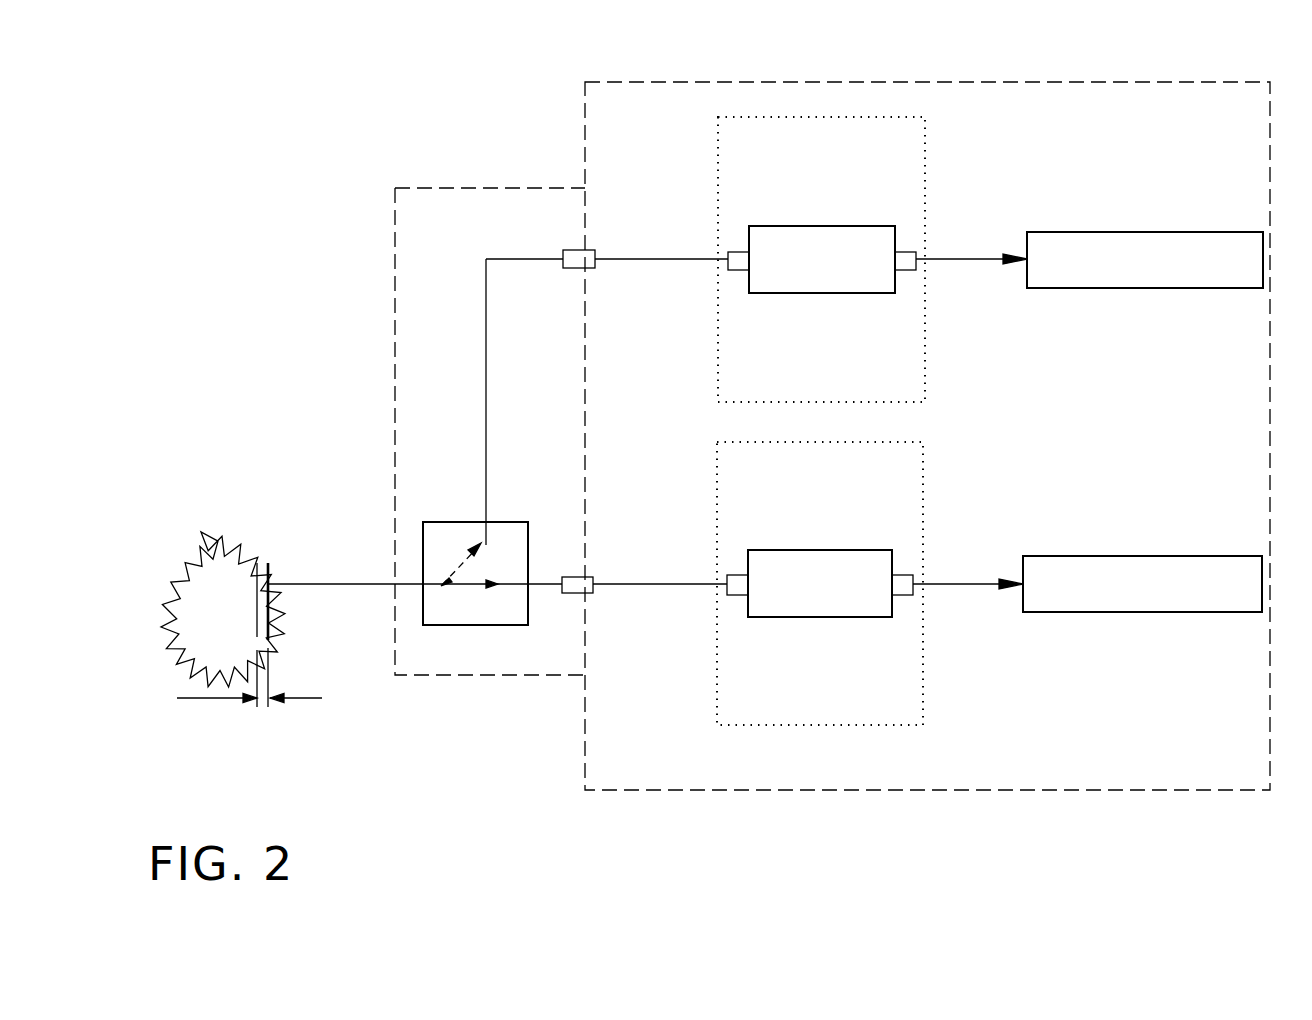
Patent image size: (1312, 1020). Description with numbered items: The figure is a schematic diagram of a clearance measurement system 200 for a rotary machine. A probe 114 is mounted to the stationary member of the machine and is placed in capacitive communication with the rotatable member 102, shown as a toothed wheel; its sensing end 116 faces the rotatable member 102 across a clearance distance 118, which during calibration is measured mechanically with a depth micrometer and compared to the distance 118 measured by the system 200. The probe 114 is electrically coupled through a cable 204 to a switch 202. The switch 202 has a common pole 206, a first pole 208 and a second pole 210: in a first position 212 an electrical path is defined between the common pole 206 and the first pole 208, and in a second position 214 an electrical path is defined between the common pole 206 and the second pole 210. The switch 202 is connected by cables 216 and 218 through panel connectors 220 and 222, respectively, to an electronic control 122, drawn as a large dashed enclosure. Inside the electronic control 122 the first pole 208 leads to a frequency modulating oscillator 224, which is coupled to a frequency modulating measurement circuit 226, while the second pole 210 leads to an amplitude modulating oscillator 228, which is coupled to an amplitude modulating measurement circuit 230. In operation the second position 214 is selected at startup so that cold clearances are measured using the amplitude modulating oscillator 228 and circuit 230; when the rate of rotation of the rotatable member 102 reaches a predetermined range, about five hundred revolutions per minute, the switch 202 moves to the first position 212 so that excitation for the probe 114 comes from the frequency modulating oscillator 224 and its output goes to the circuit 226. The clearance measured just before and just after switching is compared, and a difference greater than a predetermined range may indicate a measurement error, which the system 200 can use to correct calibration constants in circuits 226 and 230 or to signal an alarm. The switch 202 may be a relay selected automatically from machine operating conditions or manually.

The rotatable member 102 is at (170, 560).
The probe 114 is at (268, 577).
The sensing end 116 is at (265, 565).
The distance 118 is at (212, 698).
The electronic control 122 is at (635, 80).
The clearance measurement system 200 is at (342, 117).
The switch 202 is at (423, 567).
The cable 204 is at (360, 585).
The common pole 206 is at (430, 587).
The first pole 208 is at (517, 587).
The second pole 210 is at (487, 532).
The first position 212 is at (472, 588).
The second position 214 is at (470, 518).
The cable 216 is at (487, 353).
The cable 218 is at (545, 580).
The panel connector 220 is at (587, 250).
The panel connector 222 is at (587, 577).
The frequency modulating oscillator 224 is at (877, 725).
The frequency modulating measurement circuit 226 is at (1114, 556).
The amplitude modulating oscillator 228 is at (925, 172).
The amplitude modulating measurement circuit 230 is at (1116, 232).